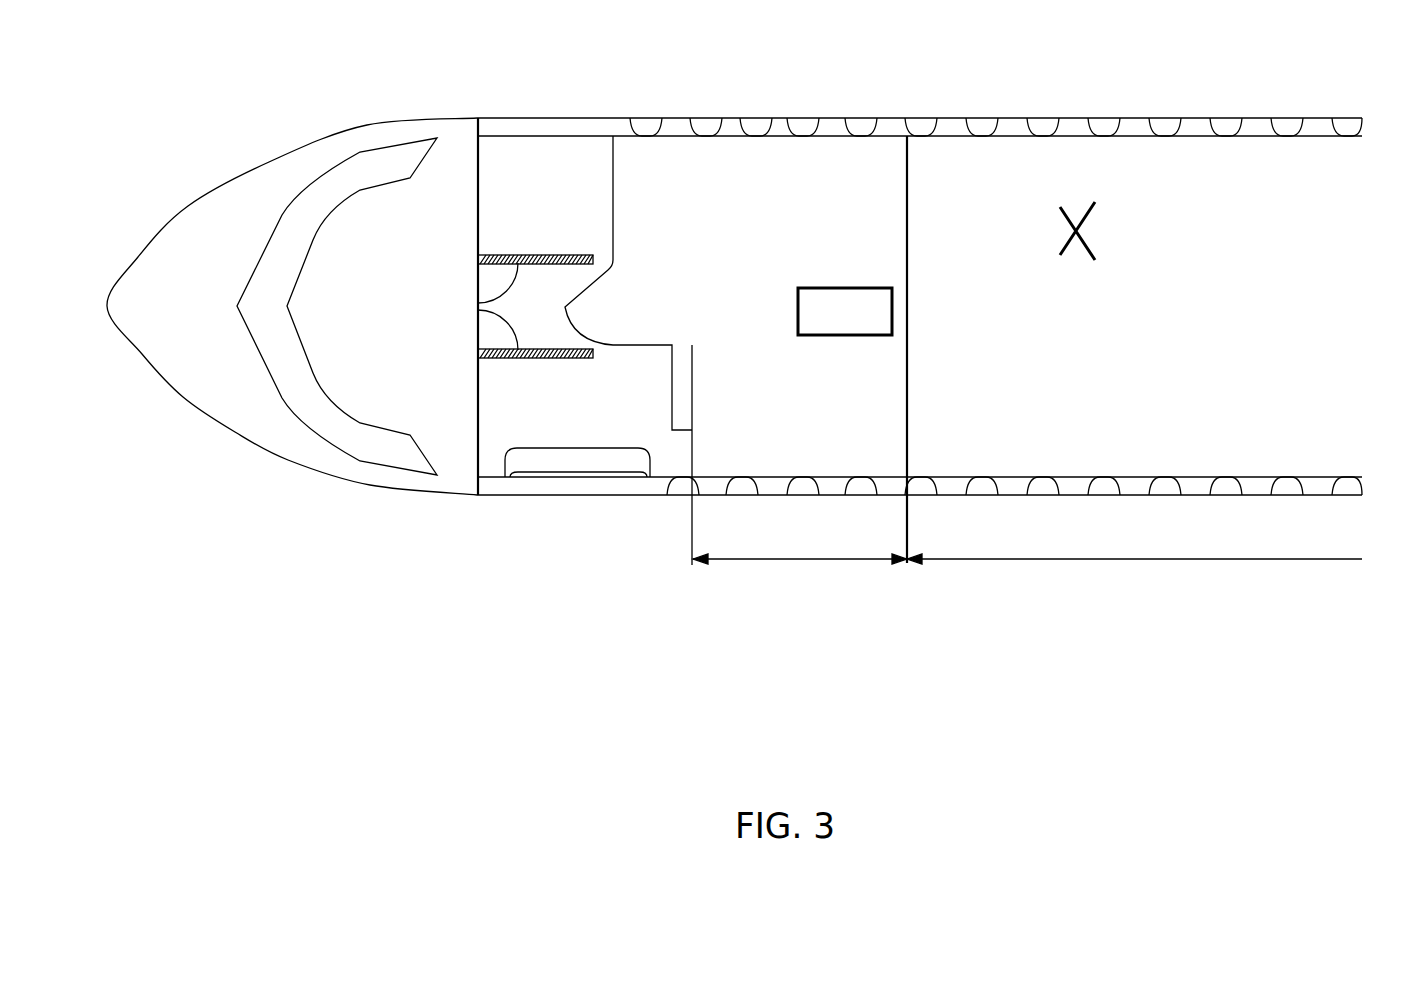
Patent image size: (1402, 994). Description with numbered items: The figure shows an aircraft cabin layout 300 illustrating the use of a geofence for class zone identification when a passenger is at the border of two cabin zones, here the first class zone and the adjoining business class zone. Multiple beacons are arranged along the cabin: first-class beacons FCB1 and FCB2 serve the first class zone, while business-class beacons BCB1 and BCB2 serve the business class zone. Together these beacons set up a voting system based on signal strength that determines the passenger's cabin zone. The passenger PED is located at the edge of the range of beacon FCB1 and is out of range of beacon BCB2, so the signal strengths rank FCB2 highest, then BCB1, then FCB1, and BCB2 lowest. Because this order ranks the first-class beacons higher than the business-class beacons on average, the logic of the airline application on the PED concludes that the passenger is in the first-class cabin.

The aircraft cabin layout 300 is at (734, 320).
The passenger PED is at (845, 311).
The First-Class Beacon #1 FCB1 is at (825, 282).
The First-Class Beacon #2 FCB2 is at (775, 261).
The Business-Class Beacon #1 BCB1 is at (1133, 82).
The Business-Class Beacon #2 BCB2 is at (977, 275).